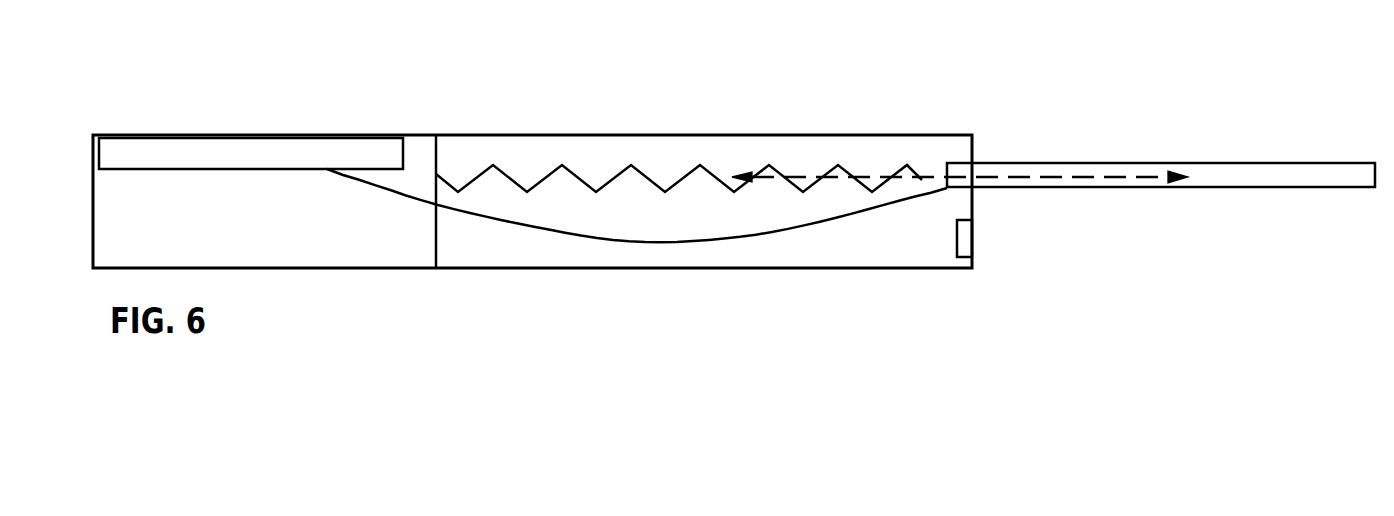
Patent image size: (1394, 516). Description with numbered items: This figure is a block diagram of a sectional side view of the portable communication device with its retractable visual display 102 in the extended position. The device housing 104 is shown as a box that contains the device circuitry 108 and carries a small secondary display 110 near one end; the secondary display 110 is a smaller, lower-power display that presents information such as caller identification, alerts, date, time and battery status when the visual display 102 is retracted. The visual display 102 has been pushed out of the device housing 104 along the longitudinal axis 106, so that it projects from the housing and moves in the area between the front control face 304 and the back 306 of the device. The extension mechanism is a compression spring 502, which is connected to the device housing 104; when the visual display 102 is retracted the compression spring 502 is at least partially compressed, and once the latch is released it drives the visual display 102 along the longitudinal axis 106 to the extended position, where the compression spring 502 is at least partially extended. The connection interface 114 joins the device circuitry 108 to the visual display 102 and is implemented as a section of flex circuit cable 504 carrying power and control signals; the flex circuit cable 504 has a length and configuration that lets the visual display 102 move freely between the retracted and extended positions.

The visual display 102 is at (1052, 163).
The device housing 104 is at (752, 268).
The longitudinal axis 106 is at (1137, 175).
The device circuitry 108 is at (327, 133).
The secondary display 110 is at (973, 247).
The connection interface 114 is at (486, 248).
The front control face 304 is at (843, 60).
The back 306 is at (735, 292).
The compression spring 502 is at (572, 172).
The flex circuit cable 504 is at (615, 242).